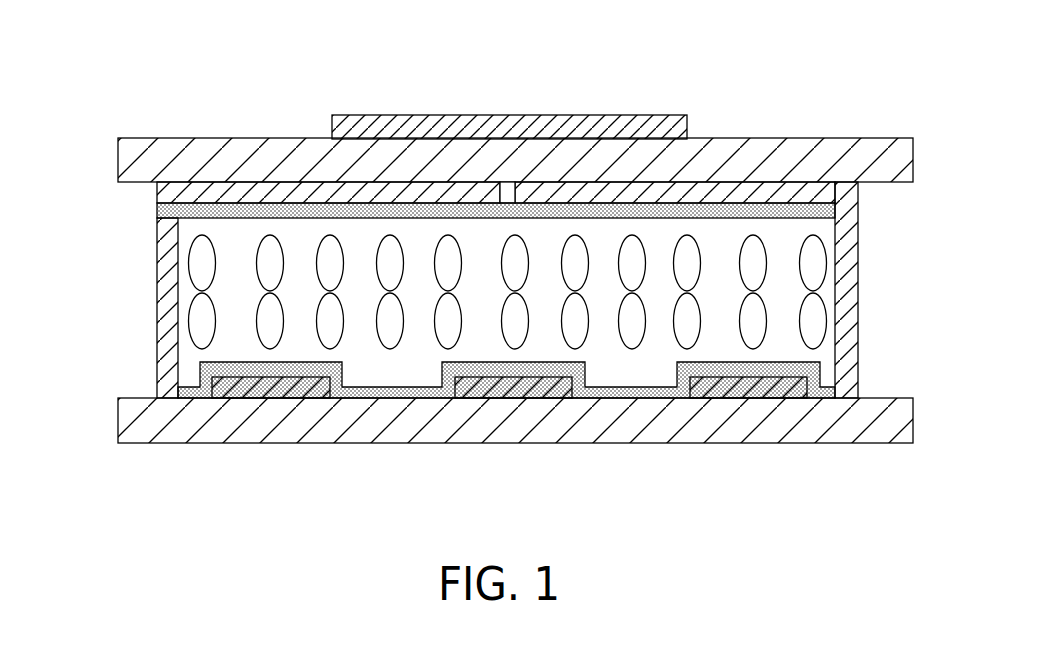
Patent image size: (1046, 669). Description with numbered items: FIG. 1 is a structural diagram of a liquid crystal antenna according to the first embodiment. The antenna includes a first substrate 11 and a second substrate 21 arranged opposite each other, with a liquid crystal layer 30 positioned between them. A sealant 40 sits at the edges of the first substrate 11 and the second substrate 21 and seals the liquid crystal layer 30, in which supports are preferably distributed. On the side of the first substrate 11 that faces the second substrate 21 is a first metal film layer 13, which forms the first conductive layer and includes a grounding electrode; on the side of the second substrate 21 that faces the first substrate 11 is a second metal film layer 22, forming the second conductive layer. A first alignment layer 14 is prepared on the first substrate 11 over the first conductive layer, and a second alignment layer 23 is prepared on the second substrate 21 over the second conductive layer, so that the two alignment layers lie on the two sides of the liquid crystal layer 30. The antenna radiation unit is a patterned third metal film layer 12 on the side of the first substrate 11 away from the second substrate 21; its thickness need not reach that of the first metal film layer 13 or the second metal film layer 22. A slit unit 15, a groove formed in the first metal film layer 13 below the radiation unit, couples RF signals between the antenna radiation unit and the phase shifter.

The first substrate 11 is at (738, 165).
The third metal film layer 12 is at (509, 72).
The first metal film layer 13 is at (803, 195).
The first alignment layer 14 is at (813, 216).
The slit unit 15 is at (512, 188).
The second substrate 21 is at (208, 428).
The second metal film layer 22 is at (313, 388).
The second alignment layer 23 is at (808, 370).
The liquid crystal layer 30 is at (265, 263).
The sealant 40 is at (453, 290).